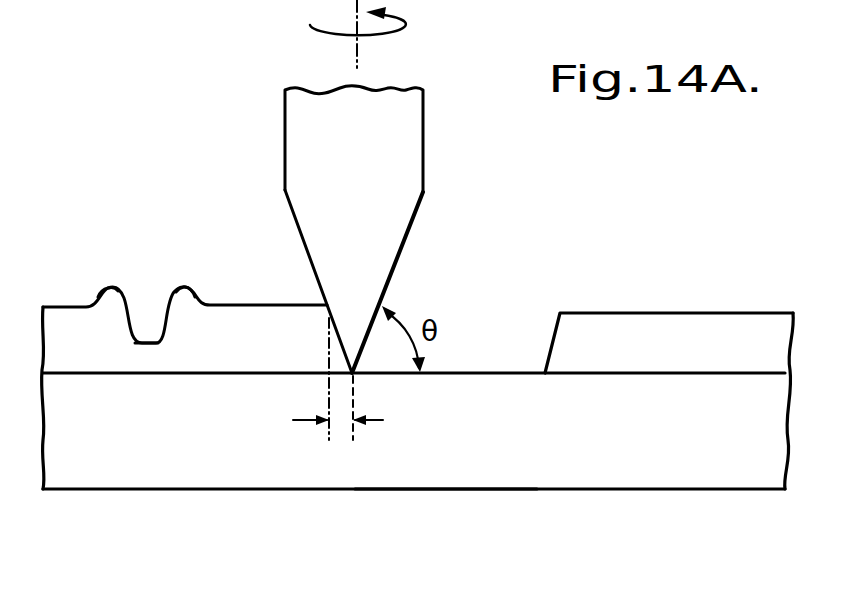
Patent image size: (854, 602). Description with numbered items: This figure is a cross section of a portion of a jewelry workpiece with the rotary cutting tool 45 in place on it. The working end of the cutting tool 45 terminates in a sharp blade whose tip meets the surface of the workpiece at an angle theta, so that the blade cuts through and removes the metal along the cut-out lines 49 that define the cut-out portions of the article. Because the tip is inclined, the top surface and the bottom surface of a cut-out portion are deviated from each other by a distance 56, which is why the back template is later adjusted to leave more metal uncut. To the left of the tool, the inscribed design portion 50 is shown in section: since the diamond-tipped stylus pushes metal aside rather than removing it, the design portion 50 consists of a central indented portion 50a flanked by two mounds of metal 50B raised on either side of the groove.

The rotary cutting tool 45 is at (405, 192).
The cut-out lines 49 is at (537, 533).
The design portion 50 is at (201, 255).
The mounds of metal 50B is at (108, 289).
The central indented portion 50a is at (152, 336).
The deviation distance 56 is at (342, 428).